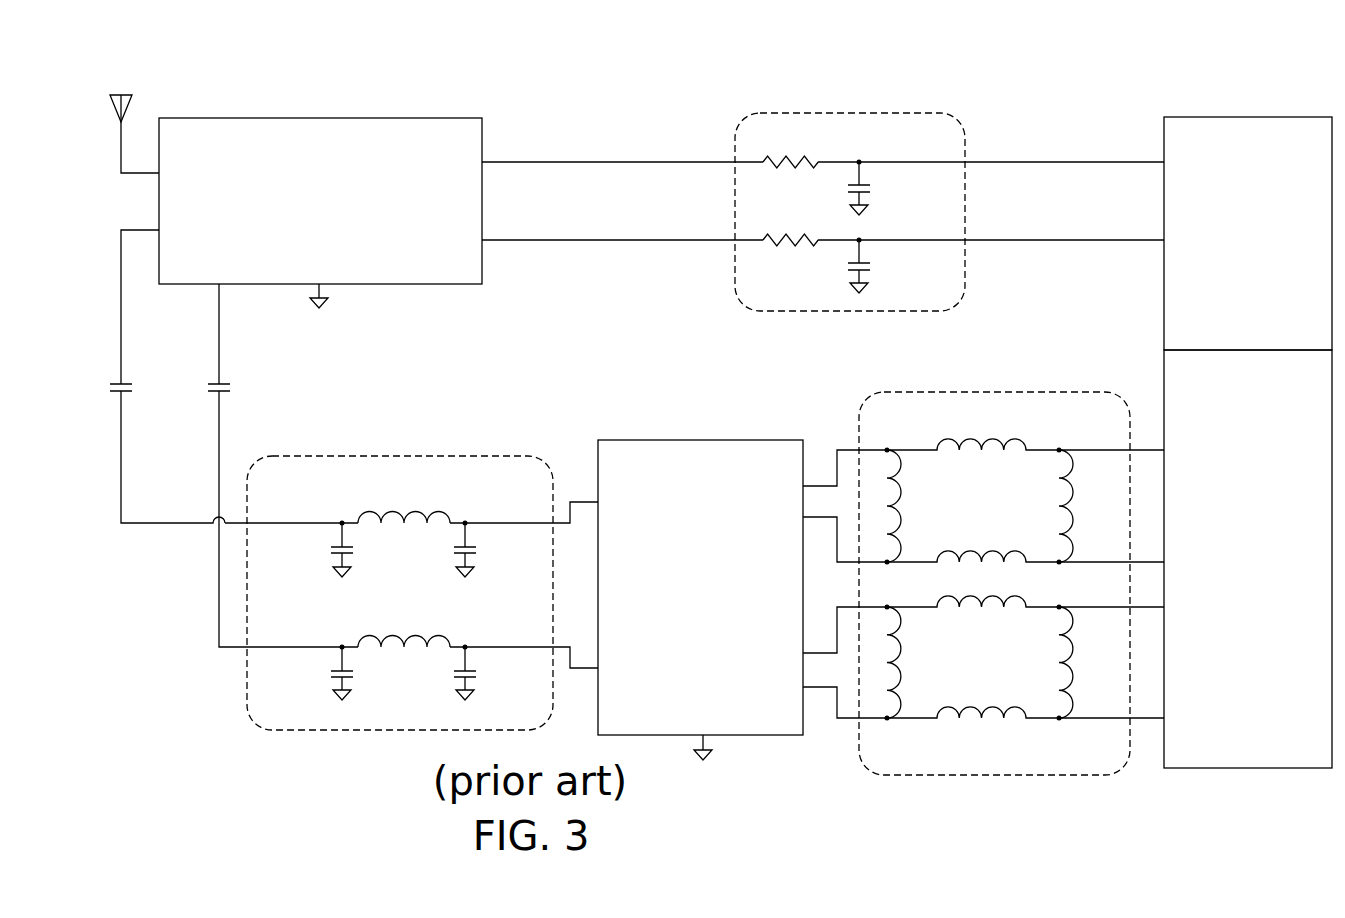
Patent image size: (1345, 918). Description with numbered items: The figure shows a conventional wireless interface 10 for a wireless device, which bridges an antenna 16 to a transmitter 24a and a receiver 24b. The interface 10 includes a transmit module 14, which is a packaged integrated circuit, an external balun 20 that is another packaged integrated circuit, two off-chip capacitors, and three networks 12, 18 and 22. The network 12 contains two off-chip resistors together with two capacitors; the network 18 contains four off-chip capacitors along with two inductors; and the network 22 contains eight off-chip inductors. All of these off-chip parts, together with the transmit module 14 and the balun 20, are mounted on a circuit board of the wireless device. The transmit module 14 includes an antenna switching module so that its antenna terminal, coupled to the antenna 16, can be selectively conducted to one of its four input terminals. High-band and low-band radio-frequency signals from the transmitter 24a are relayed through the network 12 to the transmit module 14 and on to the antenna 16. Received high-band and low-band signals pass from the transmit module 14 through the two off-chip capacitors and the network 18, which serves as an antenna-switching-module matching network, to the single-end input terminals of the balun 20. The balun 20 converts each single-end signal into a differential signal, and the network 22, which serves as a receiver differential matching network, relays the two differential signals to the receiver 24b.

The wireless interface 10 is at (632, 124).
The network 12 is at (832, 113).
The transmit module 14 is at (272, 118).
The antenna 16 is at (128, 93).
The network 18 is at (420, 456).
The BALUN 20 is at (665, 440).
The network 22 is at (937, 392).
The transmitter 24a is at (1164, 323).
The receiver 24b is at (1164, 366).